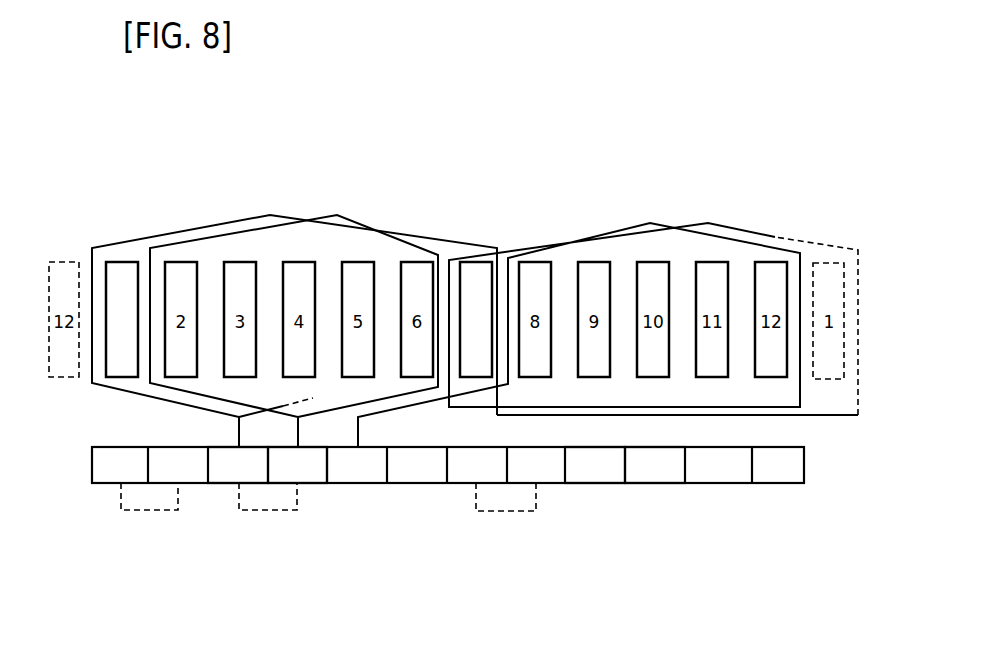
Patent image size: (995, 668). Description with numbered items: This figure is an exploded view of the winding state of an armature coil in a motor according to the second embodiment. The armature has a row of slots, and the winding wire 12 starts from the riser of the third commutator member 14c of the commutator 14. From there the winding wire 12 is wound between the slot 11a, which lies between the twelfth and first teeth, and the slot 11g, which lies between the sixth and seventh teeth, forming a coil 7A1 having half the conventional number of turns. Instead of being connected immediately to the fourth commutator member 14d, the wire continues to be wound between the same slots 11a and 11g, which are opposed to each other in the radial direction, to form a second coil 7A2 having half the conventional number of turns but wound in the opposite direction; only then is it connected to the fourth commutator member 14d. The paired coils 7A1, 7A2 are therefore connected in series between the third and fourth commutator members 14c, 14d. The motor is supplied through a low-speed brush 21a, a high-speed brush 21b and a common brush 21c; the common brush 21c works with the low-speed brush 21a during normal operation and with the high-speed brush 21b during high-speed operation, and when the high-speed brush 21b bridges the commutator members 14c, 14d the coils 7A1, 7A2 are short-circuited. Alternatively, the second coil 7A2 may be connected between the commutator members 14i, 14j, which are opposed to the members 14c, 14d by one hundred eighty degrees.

The coil 7A1 is at (177, 230).
The second coil 7A2 is at (587, 236).
The slot 11a is at (87, 267).
The slot 11g is at (445, 265).
The winding wire 12 is at (457, 288).
The commutator 14 is at (429, 502).
The third commutator member 14c is at (223, 479).
The fourth commutator member 14d is at (313, 478).
The commutator member 14i is at (593, 478).
The commutator member 14j is at (647, 478).
The low-speed brush 21a is at (150, 512).
The high-speed brush 21b is at (270, 512).
The common brush 21c is at (507, 513).